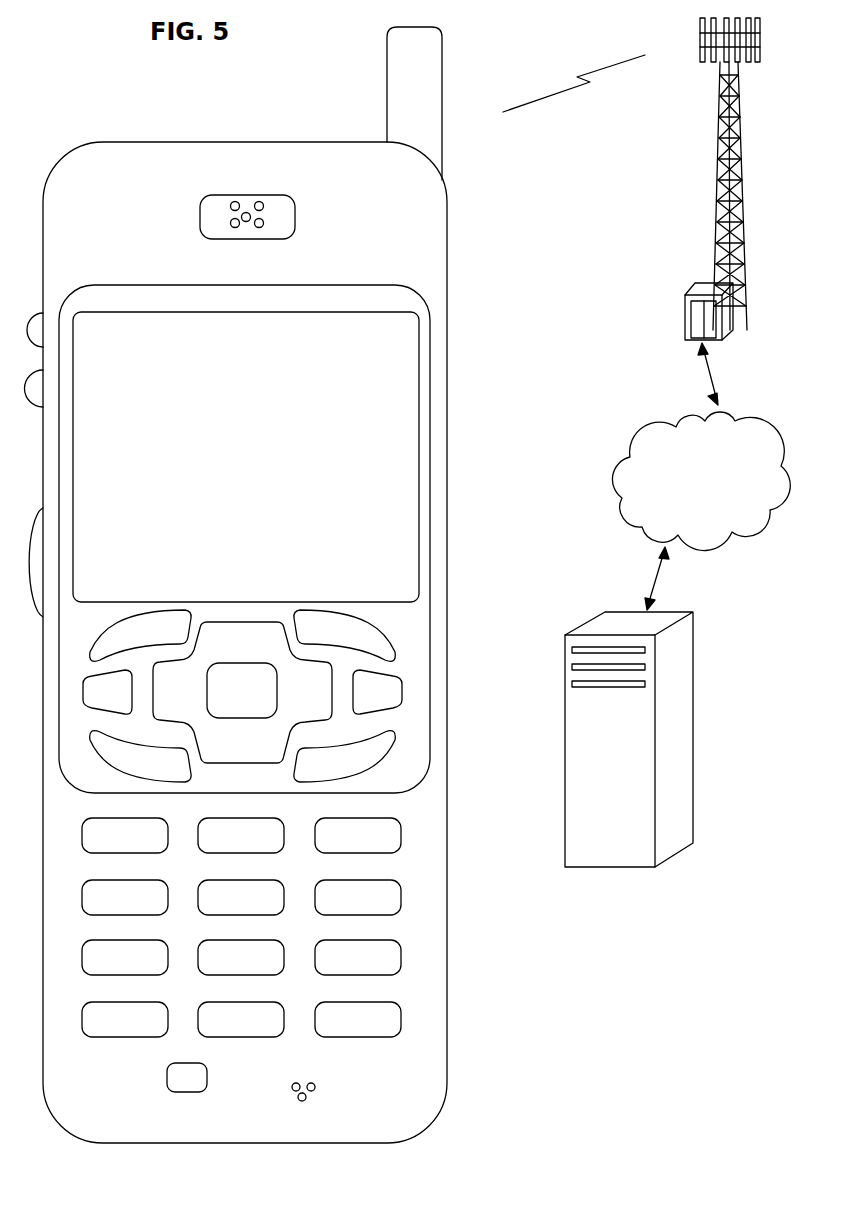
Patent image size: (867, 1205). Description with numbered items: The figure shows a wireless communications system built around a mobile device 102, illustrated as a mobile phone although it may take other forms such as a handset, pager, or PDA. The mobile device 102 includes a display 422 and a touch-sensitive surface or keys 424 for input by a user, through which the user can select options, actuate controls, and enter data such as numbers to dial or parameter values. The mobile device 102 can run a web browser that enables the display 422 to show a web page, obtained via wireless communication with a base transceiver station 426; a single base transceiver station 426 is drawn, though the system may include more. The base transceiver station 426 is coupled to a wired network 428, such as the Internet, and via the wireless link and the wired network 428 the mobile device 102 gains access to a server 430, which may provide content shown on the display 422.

The mobile device 102 is at (84, 1141).
The display 422 is at (432, 322).
The keys 424 is at (456, 1044).
The base transceiver station 426 is at (715, 193).
The wired network 428 is at (630, 527).
The server 430 is at (604, 867).